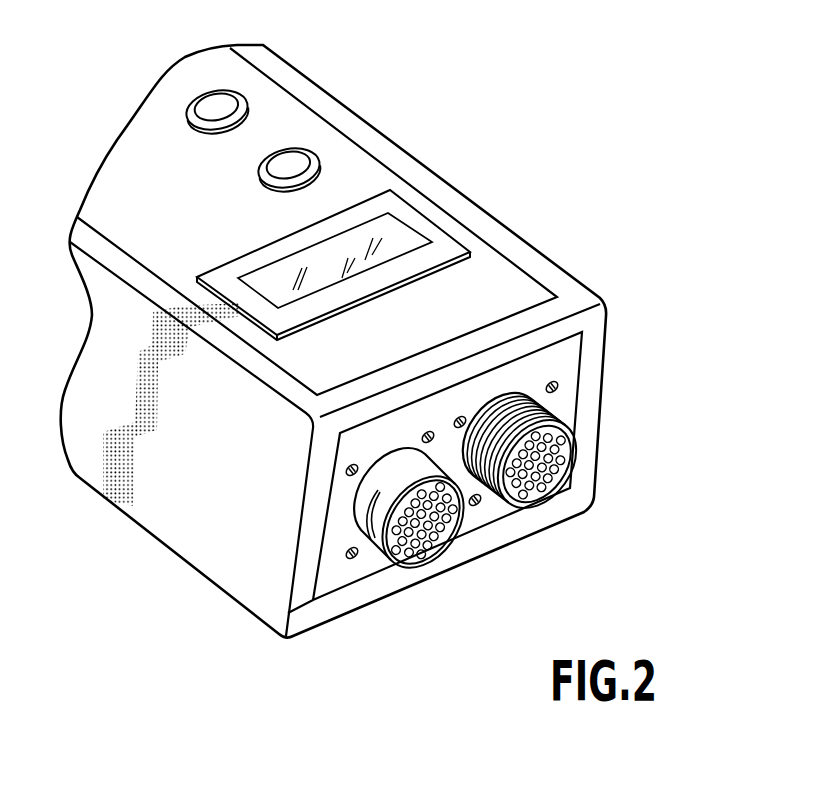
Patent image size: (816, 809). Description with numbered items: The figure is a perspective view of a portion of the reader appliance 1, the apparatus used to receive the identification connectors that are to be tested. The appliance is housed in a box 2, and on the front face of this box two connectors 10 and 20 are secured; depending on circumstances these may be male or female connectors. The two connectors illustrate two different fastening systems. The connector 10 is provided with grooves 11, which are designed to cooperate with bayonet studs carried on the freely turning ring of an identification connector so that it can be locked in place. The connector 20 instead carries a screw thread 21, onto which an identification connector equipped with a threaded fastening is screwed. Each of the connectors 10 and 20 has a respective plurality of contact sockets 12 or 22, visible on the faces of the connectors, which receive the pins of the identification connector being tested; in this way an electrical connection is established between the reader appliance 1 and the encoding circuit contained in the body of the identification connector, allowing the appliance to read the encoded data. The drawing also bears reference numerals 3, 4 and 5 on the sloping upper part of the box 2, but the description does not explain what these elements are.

The reader appliance 1 is at (434, 99).
The box 2 is at (183, 542).
The display 3 is at (267, 277).
The USE button 4 is at (222, 98).
The TEST button 5 is at (291, 158).
The connector 10 is at (391, 570).
The grooves 11 is at (365, 515).
The contact sockets 12 is at (423, 537).
The connector 20 is at (588, 449).
The screw thread 21 is at (507, 392).
The contact sockets 22 is at (527, 490).